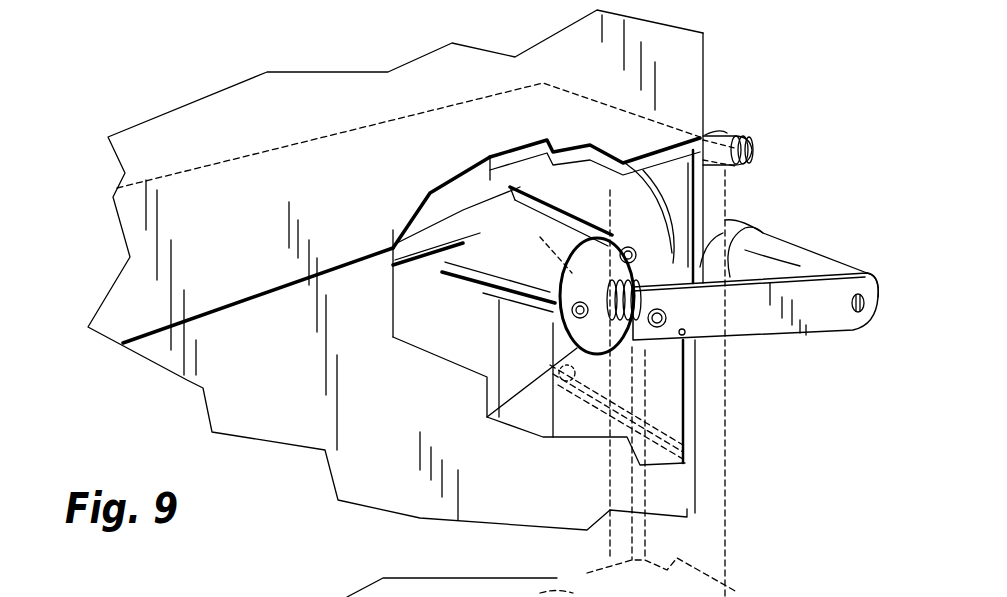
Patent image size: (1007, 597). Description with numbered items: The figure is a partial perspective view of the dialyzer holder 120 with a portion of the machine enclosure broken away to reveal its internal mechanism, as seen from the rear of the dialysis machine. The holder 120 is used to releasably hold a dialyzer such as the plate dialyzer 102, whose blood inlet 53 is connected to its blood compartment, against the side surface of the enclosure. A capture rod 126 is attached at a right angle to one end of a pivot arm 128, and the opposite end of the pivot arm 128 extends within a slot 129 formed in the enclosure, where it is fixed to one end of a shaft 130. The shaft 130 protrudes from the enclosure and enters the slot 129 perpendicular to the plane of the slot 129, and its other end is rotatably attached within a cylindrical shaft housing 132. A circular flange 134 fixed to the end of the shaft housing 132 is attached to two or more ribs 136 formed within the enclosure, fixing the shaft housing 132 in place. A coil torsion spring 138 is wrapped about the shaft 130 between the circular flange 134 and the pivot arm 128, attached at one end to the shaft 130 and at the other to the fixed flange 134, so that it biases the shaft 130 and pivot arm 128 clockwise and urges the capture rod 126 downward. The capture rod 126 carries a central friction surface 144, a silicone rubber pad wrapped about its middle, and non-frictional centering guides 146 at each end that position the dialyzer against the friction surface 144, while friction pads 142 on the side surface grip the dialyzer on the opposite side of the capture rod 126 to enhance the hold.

The blood inlet 53 is at (733, 170).
The plate dialyzer 102 is at (725, 505).
The dialyzer holder 120 is at (762, 447).
The capture rod 126 is at (848, 250).
The pivot arm 128 is at (807, 330).
The slot 129 is at (636, 170).
The shaft 130 is at (545, 300).
The shaft housing 132 is at (513, 257).
The circular flange 134 is at (487, 417).
The ribs 136 is at (470, 187).
The coil torsion spring 138 is at (693, 347).
The friction pads 142 is at (602, 434).
The central friction surface 144 is at (740, 240).
The centering guides 146 is at (793, 262).